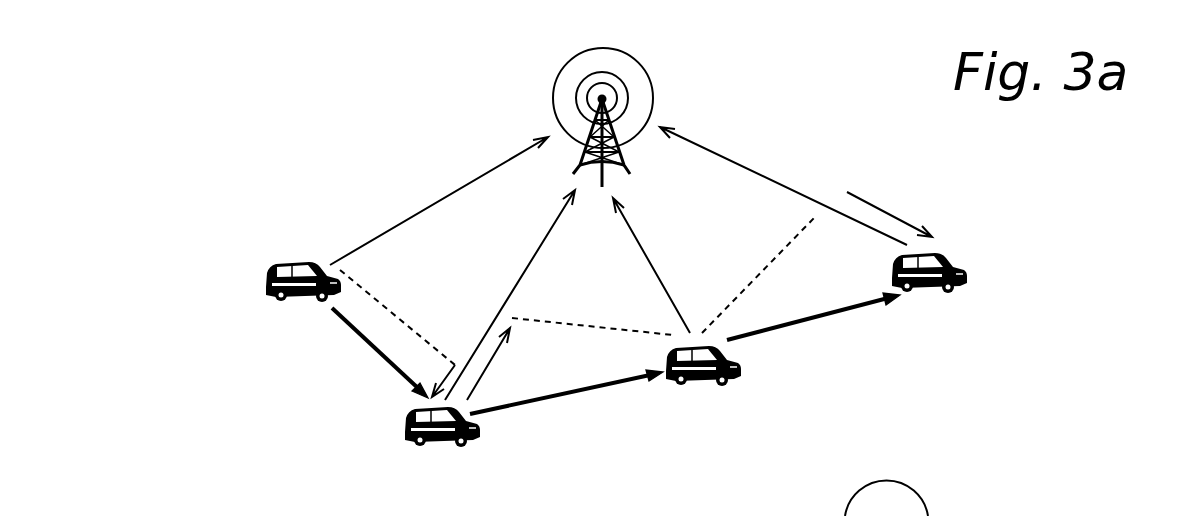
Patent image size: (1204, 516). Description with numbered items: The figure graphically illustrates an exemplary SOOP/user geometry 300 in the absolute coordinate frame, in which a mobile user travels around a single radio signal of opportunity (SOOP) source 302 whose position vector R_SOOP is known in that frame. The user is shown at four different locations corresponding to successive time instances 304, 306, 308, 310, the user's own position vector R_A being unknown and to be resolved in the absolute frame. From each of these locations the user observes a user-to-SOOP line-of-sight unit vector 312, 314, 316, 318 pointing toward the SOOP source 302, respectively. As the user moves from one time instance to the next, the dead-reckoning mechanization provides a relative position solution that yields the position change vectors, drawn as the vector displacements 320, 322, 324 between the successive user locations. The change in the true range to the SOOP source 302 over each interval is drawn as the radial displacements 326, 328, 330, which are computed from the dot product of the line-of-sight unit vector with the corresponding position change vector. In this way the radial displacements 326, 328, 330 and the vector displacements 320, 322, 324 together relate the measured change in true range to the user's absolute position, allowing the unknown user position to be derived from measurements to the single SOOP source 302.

The single SOOP source positioning scenario 300 is at (1047, 206).
The signal of opportunity source 302 is at (630, 50).
The user at time instance t1 304 is at (288, 297).
The user at time instance t2 306 is at (487, 431).
The user at time instance t3 308 is at (747, 365).
The user at time instance t4 310 is at (975, 270).
The user-to-SOOP line-of-sight unit vector 312 is at (478, 172).
The user-to-SOOP line-of-sight unit vector 314 is at (520, 270).
The user-to-SOOP line-of-sight unit vector 316 is at (627, 227).
The user-to-SOOP line-of-sight unit vector 318 is at (763, 180).
The vector displacement 320 is at (398, 378).
The vector displacement 322 is at (553, 398).
The vector displacement 324 is at (815, 322).
The radial displacement 326 is at (433, 377).
The radial displacement 328 is at (470, 392).
The radial displacement 330 is at (908, 223).